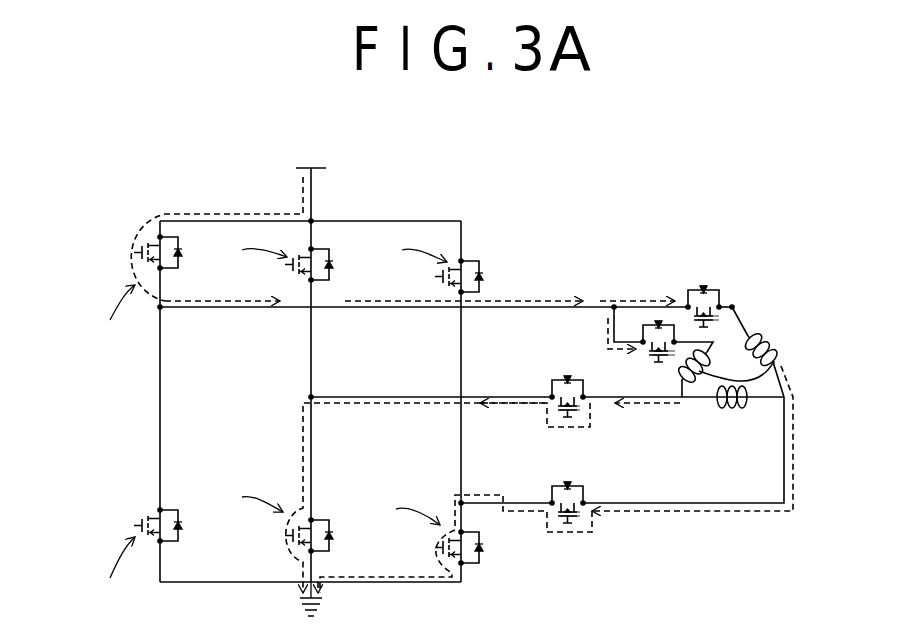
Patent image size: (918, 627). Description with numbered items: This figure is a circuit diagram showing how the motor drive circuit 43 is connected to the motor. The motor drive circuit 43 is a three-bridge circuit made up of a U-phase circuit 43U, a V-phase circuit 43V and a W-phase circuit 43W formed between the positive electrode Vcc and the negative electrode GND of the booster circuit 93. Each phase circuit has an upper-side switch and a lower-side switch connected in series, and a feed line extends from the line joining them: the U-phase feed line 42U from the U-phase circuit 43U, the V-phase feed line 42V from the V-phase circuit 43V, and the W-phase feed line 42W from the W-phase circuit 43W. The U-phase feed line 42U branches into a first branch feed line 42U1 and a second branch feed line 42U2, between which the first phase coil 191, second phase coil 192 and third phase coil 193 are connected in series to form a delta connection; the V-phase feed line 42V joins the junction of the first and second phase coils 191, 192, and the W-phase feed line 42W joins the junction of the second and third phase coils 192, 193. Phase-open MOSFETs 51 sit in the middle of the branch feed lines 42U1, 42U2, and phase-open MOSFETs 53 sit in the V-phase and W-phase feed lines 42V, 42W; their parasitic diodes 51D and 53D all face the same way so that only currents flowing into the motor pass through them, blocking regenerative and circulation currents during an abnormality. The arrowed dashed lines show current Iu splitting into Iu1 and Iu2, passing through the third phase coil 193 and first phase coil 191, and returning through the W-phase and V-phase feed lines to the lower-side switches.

The motor drive circuit 43 is at (445, 197).
The U-phase circuit 43U is at (160, 434).
The V-phase circuit 43V is at (311, 363).
The W-phase circuit 43W is at (461, 355).
The booster circuit 93 is at (330, 151).
The U-phase feed line 42U is at (530, 308).
The first branch feed line 42U1 is at (681, 304).
The second branch feed line 42U2 is at (715, 341).
The V-phase feed line 42V is at (529, 400).
The W-phase feed line 42W is at (540, 508).
The phase-open MOSFET 51 is at (727, 297).
The parasitic diode 51D is at (658, 321).
The phase-open MOSFET 53 is at (574, 420).
The parasitic diode 53D is at (586, 384).
The first phase coil 191 is at (784, 379).
The second phase coil 192 is at (745, 405).
The third phase coil 193 is at (776, 345).